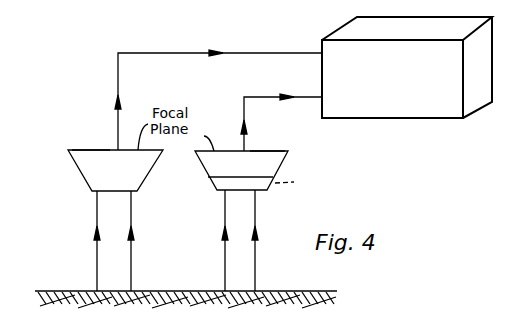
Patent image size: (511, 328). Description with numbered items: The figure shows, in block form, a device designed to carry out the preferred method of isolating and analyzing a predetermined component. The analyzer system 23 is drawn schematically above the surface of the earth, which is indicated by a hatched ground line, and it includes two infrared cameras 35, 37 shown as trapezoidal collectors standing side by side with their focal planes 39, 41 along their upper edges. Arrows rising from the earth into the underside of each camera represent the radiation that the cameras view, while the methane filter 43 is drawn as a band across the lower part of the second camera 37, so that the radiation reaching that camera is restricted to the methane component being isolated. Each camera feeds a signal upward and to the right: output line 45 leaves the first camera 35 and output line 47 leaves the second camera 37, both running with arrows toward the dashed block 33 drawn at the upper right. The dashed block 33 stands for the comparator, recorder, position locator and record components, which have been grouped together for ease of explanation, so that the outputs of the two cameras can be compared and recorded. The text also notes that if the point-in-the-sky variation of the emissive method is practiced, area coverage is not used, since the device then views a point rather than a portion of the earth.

The analyzer system 23 is at (186, 256).
The dashed block 33 is at (398, 86).
The infrared camera 35 is at (115, 170).
The infrared camera 37 is at (241, 170).
The focal plane 39 is at (88, 150).
The focal plane 41 is at (262, 151).
The methane filter 43 is at (212, 178).
The output line 45 is at (171, 53).
The output line 47 is at (262, 97).